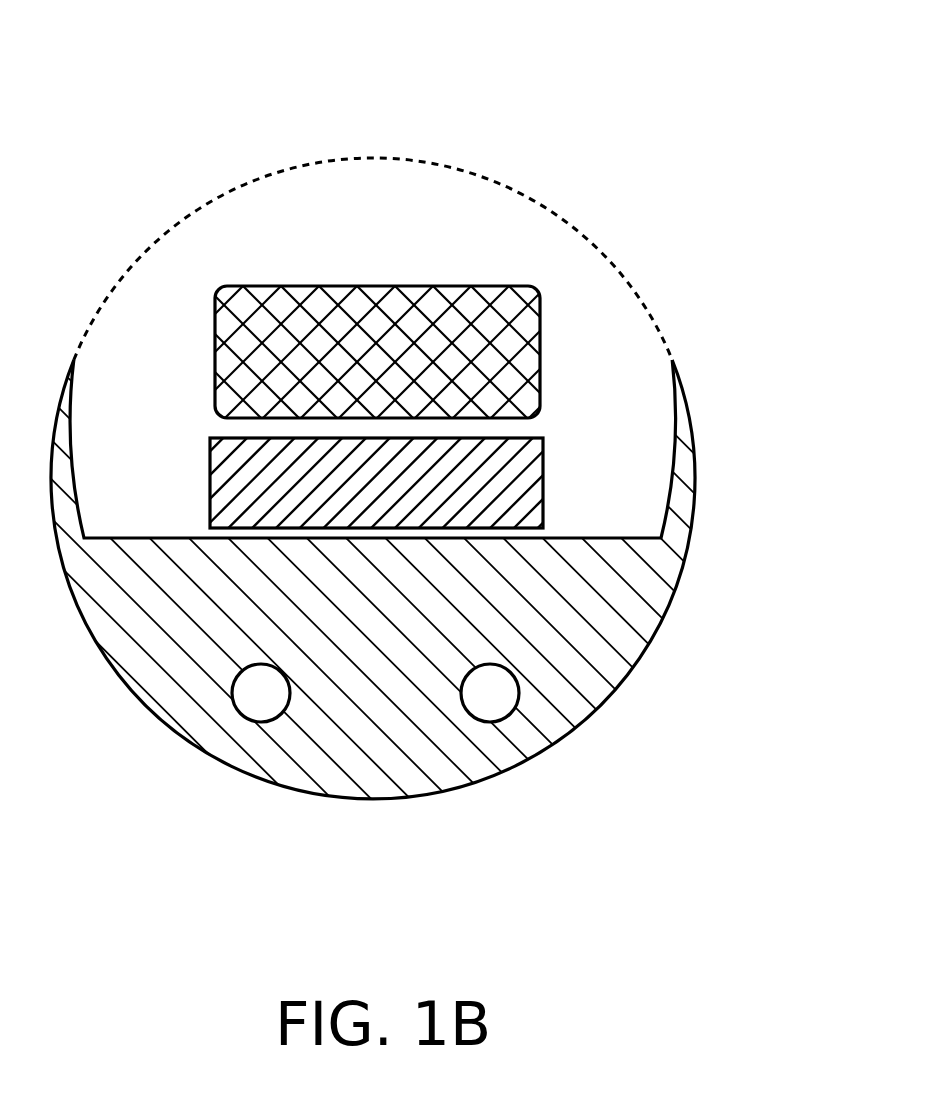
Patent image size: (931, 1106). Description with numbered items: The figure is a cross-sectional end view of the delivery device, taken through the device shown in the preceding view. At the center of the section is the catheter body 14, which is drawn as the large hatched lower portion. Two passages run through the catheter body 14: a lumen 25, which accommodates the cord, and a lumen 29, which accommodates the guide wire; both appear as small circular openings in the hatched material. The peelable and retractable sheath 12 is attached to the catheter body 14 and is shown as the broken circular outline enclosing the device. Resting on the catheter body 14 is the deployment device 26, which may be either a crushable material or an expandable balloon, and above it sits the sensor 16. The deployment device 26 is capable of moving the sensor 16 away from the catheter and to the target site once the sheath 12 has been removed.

The peelable and retractable sheath 12 is at (387, 157).
The catheter body 14 is at (613, 633).
The sensor 16 is at (540, 328).
The deployment device 26 is at (543, 487).
The lumen 25 is at (254, 719).
The lumen 29 is at (495, 719).